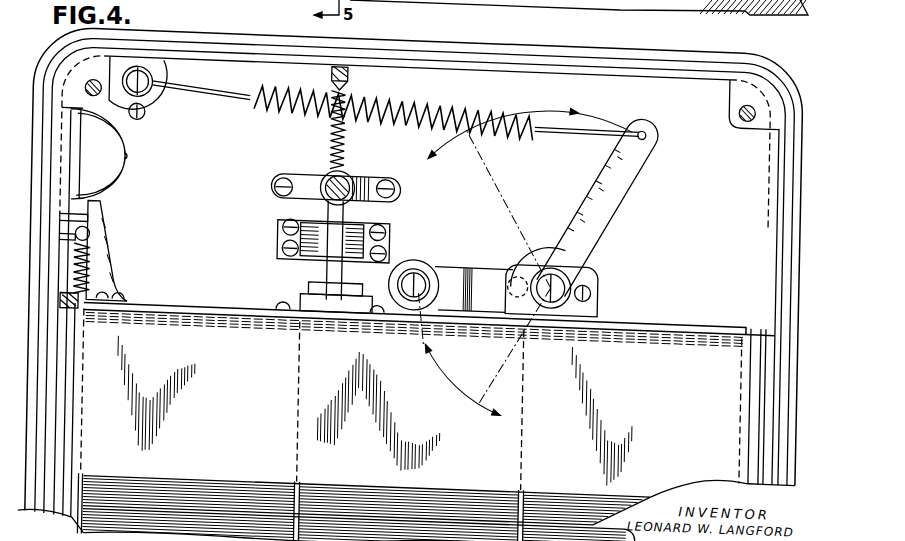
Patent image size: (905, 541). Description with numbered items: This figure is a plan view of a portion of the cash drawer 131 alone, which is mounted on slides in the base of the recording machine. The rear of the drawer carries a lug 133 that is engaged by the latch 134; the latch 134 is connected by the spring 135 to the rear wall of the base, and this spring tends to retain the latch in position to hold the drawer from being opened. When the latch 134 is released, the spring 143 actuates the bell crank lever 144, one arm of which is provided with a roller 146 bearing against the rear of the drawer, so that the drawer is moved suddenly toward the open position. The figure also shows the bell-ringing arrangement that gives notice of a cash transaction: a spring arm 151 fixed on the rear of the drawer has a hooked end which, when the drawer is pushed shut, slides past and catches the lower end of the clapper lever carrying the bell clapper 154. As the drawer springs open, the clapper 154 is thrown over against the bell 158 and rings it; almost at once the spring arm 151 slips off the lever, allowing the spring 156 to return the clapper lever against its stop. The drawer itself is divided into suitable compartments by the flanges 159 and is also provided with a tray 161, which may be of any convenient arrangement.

The cash drawer 131 is at (204, 312).
The lug 133 is at (306, 274).
The latch 134 is at (338, 257).
The spring 135 is at (350, 134).
The spring 143 is at (495, 96).
The bell crank lever 144 is at (593, 233).
The roller 146 is at (428, 251).
The spring arm 151 is at (105, 244).
The bell clapper 154 is at (92, 227).
The spring 156 is at (95, 267).
The bell 158 is at (108, 140).
The flanges 159 is at (307, 482).
The tray 161 is at (218, 505).